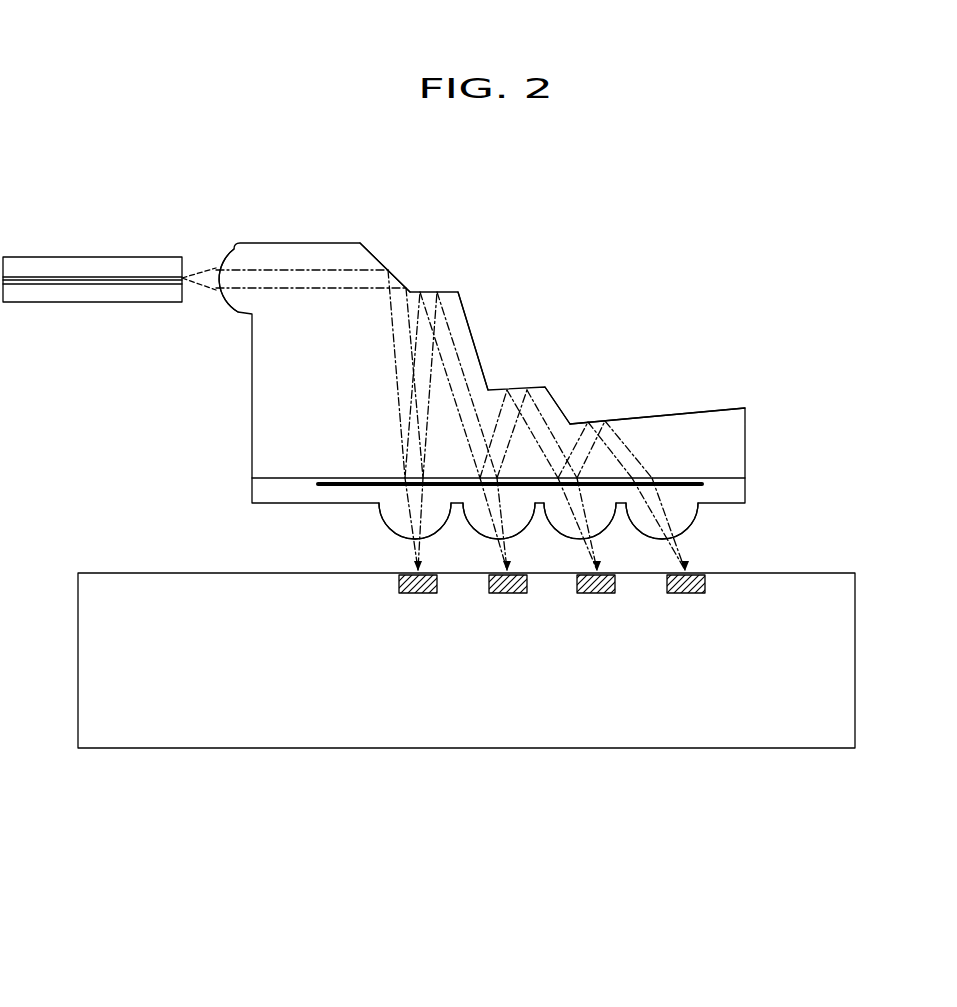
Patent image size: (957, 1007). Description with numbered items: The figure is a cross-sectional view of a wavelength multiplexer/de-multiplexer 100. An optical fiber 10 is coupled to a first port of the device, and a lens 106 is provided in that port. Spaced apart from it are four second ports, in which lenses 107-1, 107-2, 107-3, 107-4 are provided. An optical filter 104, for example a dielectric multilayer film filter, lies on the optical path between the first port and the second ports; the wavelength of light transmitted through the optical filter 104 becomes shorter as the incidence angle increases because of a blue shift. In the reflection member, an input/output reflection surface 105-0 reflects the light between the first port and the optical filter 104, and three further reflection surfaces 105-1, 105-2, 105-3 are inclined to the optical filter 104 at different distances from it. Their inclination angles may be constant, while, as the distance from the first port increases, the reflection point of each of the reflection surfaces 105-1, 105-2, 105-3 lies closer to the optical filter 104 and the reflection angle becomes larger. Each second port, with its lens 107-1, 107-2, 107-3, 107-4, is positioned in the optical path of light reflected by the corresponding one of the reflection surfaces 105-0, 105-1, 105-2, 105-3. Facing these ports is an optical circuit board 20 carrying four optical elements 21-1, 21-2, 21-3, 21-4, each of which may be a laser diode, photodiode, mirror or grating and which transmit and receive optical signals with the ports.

The optical fiber 10 is at (92, 258).
The optical circuit board 20 is at (838, 660).
The optical element 21-1 is at (417, 594).
The optical element 21-2 is at (497, 594).
The optical element 21-3 is at (595, 594).
The optical element 21-4 is at (685, 594).
The wavelength multiplexer/de-multiplexer 100 is at (800, 395).
The optical filter 104 is at (345, 485).
The input/output reflection surface 105-0 is at (382, 257).
The reflection surface 105-1 is at (447, 291).
The reflection surface 105-2 is at (529, 388).
The reflection surface 105-3 is at (683, 409).
The lens 106 is at (233, 252).
The lens 107-1 is at (393, 520).
The lens 107-2 is at (477, 520).
The lens 107-3 is at (562, 520).
The lens 107-4 is at (653, 520).